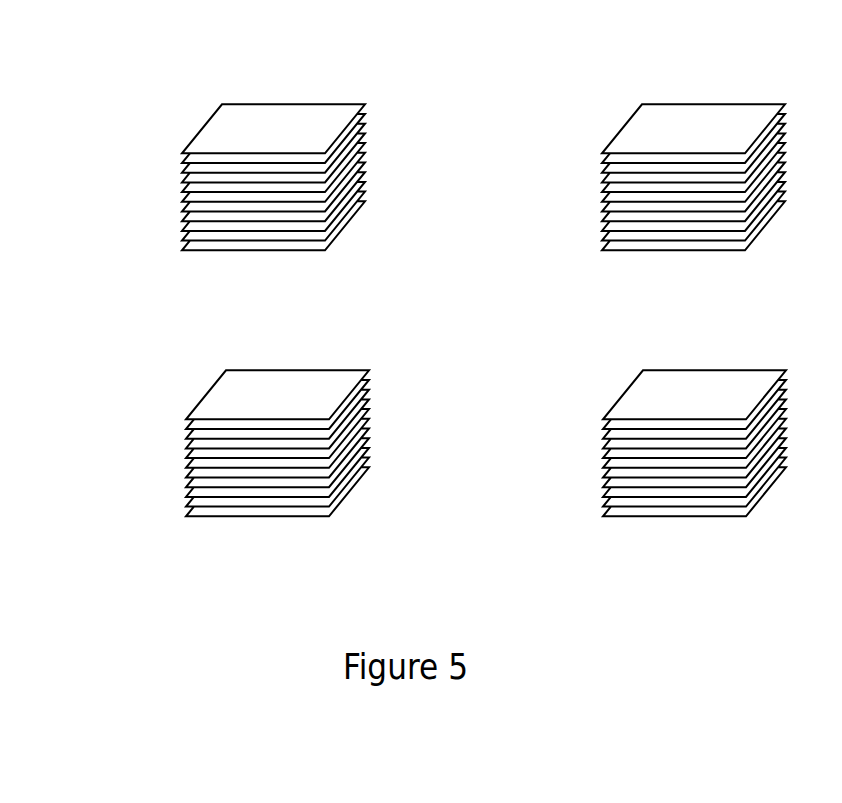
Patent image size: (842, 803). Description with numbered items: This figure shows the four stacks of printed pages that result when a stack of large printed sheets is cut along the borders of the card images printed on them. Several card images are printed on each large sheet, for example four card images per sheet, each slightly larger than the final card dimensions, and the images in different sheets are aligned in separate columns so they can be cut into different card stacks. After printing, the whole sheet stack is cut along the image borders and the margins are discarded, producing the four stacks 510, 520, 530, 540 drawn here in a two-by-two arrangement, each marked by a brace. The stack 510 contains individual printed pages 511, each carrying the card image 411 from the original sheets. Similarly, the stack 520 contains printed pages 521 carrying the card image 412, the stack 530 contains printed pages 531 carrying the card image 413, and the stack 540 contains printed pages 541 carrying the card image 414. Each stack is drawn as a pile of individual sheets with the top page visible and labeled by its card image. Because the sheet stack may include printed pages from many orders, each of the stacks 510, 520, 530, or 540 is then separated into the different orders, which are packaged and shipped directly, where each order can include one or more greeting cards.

The stack of printed pages 510 is at (158, 97).
The printed page 511 is at (328, 102).
The card image 411 is at (292, 142).
The stack of printed pages 520 is at (575, 100).
The printed page 521 is at (755, 102).
The card image 412 is at (710, 142).
The stack of printed pages 530 is at (162, 365).
The printed page 531 is at (332, 369).
The card image 413 is at (295, 408).
The stack of printed pages 540 is at (578, 367).
The printed page 541 is at (757, 368).
The card image 414 is at (712, 408).